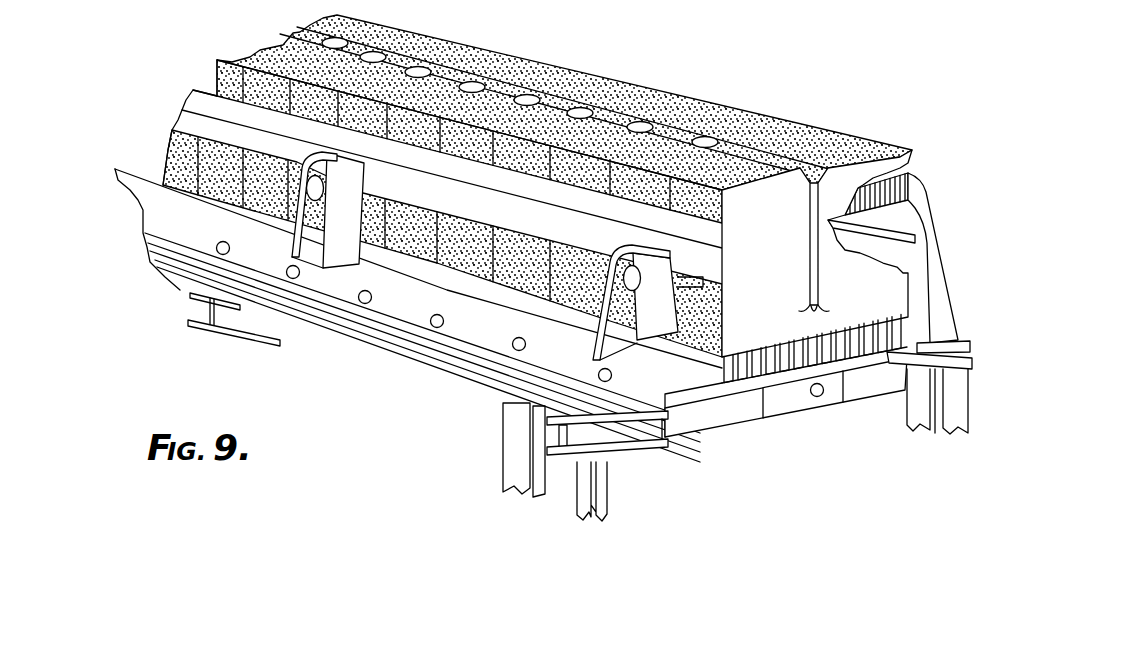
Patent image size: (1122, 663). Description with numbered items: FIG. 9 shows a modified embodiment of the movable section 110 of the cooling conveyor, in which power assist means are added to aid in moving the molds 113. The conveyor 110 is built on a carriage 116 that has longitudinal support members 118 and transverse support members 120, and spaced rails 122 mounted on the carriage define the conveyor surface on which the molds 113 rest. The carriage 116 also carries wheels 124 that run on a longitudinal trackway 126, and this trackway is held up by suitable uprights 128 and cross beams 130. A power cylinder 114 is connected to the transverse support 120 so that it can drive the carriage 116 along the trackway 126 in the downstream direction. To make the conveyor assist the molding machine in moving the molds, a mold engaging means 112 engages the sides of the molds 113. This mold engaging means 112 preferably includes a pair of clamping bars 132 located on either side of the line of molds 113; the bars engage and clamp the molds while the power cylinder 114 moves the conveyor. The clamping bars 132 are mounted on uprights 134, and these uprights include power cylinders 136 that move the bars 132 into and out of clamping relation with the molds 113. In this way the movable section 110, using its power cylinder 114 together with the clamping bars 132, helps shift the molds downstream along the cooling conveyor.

The movable section of the cooling conveyor 110 is at (185, 385).
The mold engaging means 112 is at (182, 112).
The molds 113 is at (818, 253).
The power cylinder 114 is at (825, 398).
The carriage 116 is at (680, 392).
The longitudinal support members 118 is at (560, 363).
The transverse support members 120 is at (765, 391).
The spaced rails 122 is at (767, 347).
The wheels 124 is at (513, 350).
The longitudinal trackway 126 is at (941, 373).
The uprights 128 is at (968, 407).
The cross beams 130 is at (970, 345).
The clamping bars 132 is at (442, 243).
The uprights 134 is at (947, 262).
The power cylinders 136 is at (312, 193).